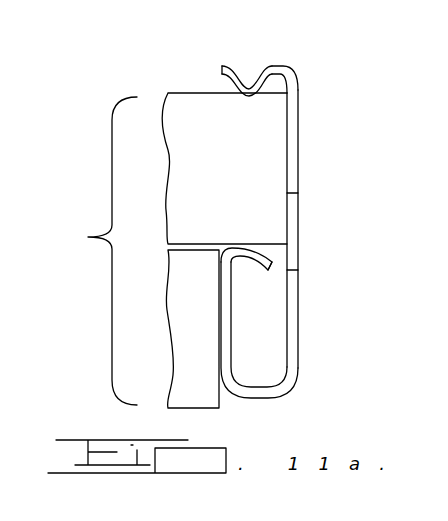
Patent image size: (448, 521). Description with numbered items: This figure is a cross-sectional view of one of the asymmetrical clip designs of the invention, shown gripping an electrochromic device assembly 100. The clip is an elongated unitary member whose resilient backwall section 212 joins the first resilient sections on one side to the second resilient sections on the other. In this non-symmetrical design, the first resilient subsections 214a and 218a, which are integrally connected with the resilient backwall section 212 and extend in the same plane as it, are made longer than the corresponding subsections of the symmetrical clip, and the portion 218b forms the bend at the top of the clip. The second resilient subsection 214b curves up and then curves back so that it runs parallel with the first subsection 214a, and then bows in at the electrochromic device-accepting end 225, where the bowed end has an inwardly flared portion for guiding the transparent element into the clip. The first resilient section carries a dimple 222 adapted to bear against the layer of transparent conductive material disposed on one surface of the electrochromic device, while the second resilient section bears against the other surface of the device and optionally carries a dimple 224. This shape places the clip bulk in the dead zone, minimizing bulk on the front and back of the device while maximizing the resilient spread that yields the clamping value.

The board assembly 100 is at (158, 250).
The clip top bend 218b is at (269, 78).
The first resilient subsection of second resilient section 218a is at (298, 141).
The resilient backwall section 212 is at (298, 244).
The first resilient subsection 214a is at (298, 333).
The second resilient subsection 214b is at (268, 398).
The dimple 224 is at (246, 95).
The dimple 222 is at (252, 244).
The electrochromic device-accepting end 225 is at (238, 88).